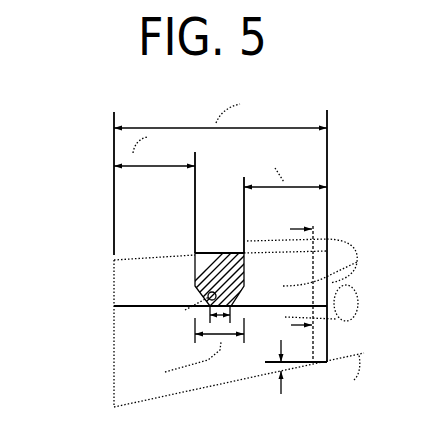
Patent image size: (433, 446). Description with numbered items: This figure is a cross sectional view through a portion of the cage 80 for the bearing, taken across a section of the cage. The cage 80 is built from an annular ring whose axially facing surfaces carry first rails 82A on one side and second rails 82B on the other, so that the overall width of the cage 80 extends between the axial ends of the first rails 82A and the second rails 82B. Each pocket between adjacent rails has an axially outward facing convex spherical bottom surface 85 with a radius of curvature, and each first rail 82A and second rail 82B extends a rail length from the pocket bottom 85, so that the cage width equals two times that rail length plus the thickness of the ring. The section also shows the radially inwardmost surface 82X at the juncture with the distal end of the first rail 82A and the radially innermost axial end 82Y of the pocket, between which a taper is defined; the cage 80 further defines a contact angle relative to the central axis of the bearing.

The cage 80 is at (350, 144).
The radially inwardmost surface 82X is at (113, 260).
The radially innermost axial end of the first pocket 82Y is at (208, 250).
The first rail 82A is at (331, 279).
The second rail 82B is at (206, 333).
The convex spherical bottom surface 85 is at (245, 252).